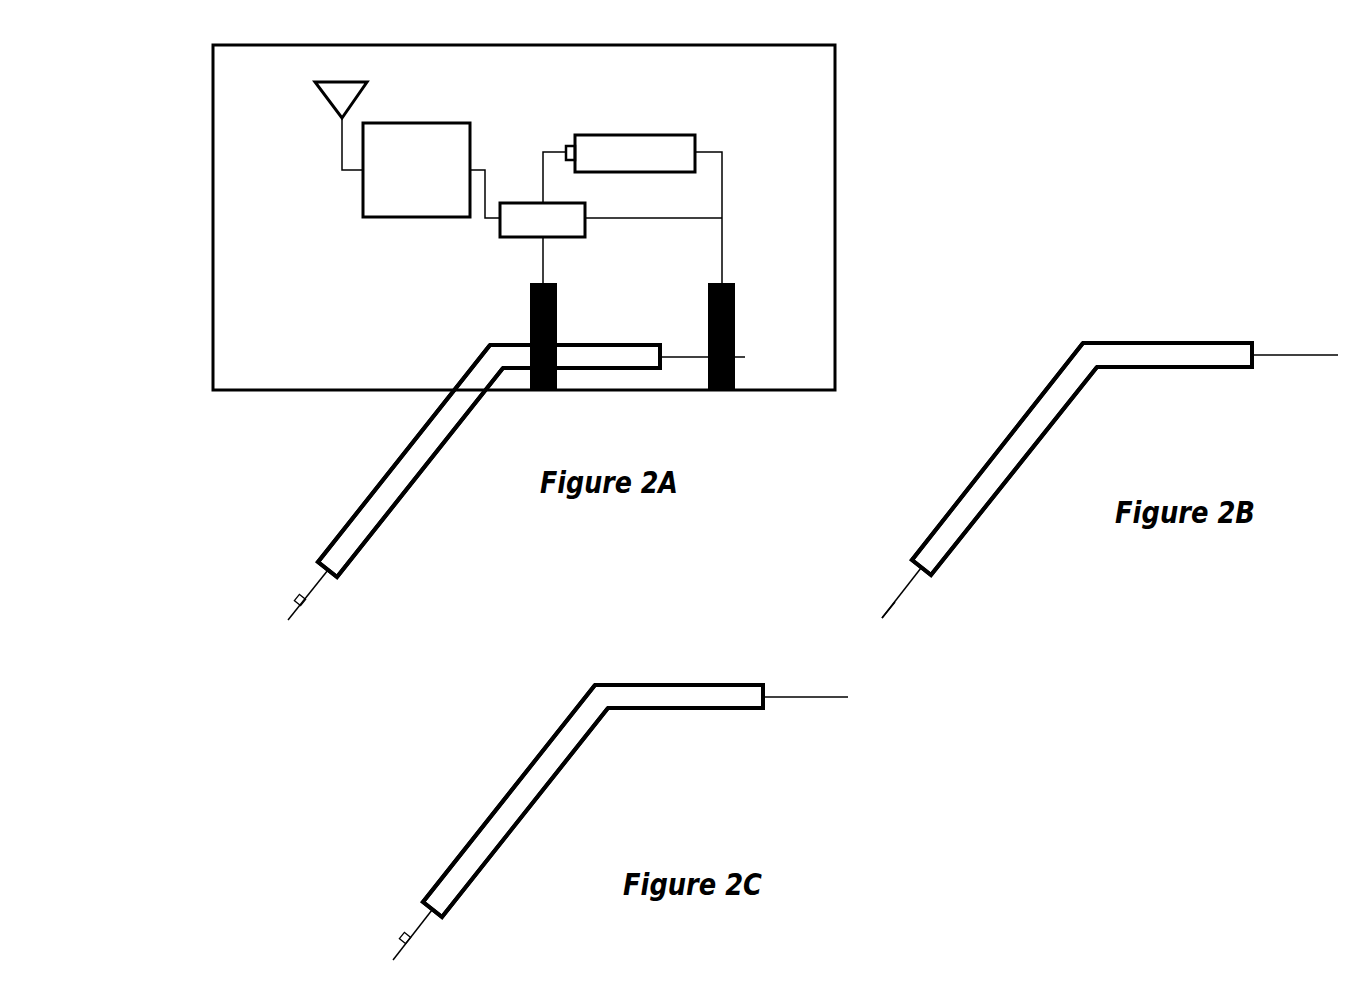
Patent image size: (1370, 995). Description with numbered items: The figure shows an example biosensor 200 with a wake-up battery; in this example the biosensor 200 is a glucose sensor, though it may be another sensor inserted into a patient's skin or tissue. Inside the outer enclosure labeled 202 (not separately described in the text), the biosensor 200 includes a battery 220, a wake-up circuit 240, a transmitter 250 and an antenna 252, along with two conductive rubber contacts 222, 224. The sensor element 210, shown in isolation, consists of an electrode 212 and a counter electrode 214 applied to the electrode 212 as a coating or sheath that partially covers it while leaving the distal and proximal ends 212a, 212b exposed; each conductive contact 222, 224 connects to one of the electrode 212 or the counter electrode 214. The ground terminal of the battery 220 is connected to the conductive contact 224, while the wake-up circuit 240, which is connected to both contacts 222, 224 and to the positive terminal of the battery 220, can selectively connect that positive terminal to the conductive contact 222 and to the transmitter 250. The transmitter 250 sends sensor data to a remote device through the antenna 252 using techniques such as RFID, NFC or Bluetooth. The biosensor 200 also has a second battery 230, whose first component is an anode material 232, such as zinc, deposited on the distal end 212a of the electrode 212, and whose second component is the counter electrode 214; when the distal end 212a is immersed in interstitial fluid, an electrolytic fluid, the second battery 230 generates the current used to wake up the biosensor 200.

In FIG. 2A, the biosensor 200 is at (466, 331).
In FIG. 2A, the housing 202 is at (210, 219).
In FIG. 2A, the antenna 252 is at (325, 101).
In FIG. 2A, the transmitter 250 is at (435, 181).
In FIG. 2A, the battery 220 is at (653, 163).
In FIG. 2A, the wake-up circuit 240 is at (562, 230).
In FIG. 2A, the conductive contact 222 is at (530, 300).
In FIG. 2A, the conductive contact 224 is at (735, 298).
In FIG. 2A, the sensor element 210 is at (465, 482).
In FIG. 2B, the sensor element 210 is at (1057, 478).
In FIG. 2A, the second battery 230 is at (465, 470).
In FIG. 2C, the second battery 230 is at (574, 807).
In FIG. 2A, the electrode 212 is at (368, 495).
In FIG. 2B, the electrode 212 is at (884, 613).
In FIG. 2C, the electrode 212 is at (473, 837).
In FIG. 2B, the counter electrode 214 is at (960, 495).
In FIG. 2B, the distal end 212a is at (916, 604).
In FIG. 2B, the proximal end 212b is at (1292, 368).
In FIG. 2A, the anode material 232 is at (297, 597).
In FIG. 2C, the anode material 232 is at (404, 937).